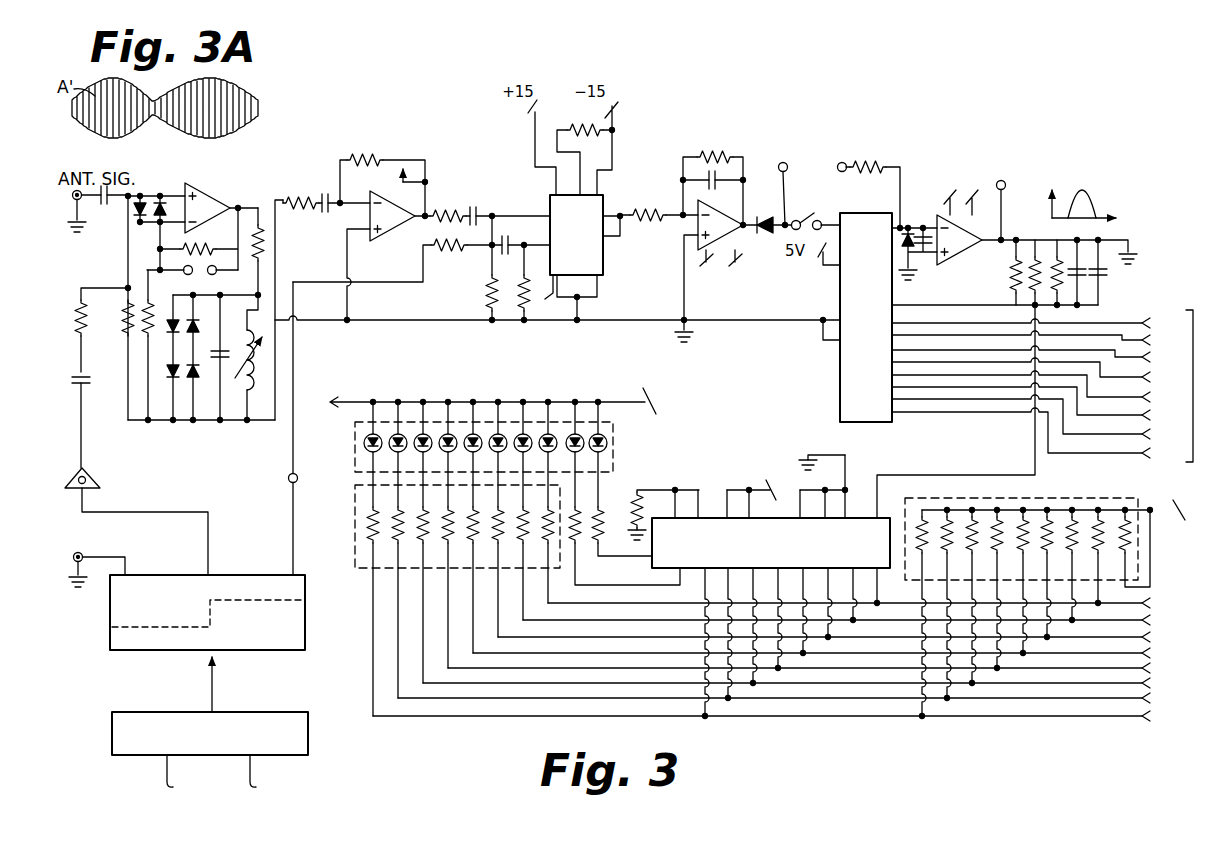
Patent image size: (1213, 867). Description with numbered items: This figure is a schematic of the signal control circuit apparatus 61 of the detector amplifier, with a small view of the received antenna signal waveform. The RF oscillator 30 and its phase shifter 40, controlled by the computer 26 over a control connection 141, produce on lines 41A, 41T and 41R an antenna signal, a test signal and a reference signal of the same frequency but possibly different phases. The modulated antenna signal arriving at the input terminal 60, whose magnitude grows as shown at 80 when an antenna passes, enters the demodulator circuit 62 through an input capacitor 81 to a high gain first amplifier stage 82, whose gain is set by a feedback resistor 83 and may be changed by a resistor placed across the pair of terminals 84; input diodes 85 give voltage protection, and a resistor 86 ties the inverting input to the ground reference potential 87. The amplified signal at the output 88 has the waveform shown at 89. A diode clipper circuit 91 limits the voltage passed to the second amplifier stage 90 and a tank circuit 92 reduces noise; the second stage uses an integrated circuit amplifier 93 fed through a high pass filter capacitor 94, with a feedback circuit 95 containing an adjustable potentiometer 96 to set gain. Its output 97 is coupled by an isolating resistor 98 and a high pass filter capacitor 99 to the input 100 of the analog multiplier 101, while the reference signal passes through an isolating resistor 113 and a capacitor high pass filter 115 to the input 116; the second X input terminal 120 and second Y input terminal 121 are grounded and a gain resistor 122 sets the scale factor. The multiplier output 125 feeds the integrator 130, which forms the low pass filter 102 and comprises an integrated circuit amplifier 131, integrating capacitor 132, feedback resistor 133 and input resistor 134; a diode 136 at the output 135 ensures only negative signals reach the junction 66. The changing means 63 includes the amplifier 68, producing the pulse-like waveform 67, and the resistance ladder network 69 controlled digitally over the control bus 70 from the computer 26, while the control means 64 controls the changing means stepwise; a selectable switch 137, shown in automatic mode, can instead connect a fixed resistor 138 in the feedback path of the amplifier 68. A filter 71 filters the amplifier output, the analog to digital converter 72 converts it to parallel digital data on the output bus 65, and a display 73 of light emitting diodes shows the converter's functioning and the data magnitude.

In FIG. 3A, the antenna signal magnitude 80 is at (144, 90).
In FIG. 3A, the amplified signal waveform 89 is at (192, 106).
In FIG. 3, the input terminal 60 is at (97, 210).
In FIG. 3, the input capacitor 81 is at (117, 185).
In FIG. 3, the first amplifier stage 82 is at (216, 190).
In FIG. 3, the feedback resistor 83 is at (210, 243).
In FIG. 3, the pair of terminals 84 is at (190, 276).
In FIG. 3, the input diodes 85 is at (170, 189).
In FIG. 3, the resistor 86 is at (146, 305).
In FIG. 3, the output of first amplifier stage 88 is at (263, 228).
In FIG. 3, the diode clipper circuit 91 is at (186, 404).
In FIG. 3, the tank circuit 92 is at (237, 307).
In FIG. 3, the high pass filter capacitor 94 is at (324, 193).
In FIG. 3, the second amplifier stage 90 is at (387, 151).
In FIG. 3, the integrated circuit amplifier 93 is at (390, 192).
In FIG. 3, the feedback circuit 95 is at (434, 165).
In FIG. 3, the adjustable potentiometer 96 is at (404, 160).
In FIG. 3, the output of second amplifier stage 97 is at (440, 212).
In FIG. 3, the isolating resistor 98 is at (474, 206).
In FIG. 3, the high pass filter capacitor 99 is at (484, 205).
In FIG. 3, the multiplier input 100 is at (522, 200).
In FIG. 3, the analog multiplier integrated circuit 101 is at (605, 255).
In FIG. 3, the isolating resistor 113 is at (447, 250).
In FIG. 3, the capacitor high pass filter 115 is at (500, 266).
In FIG. 3, the multiplier input 116 is at (495, 290).
In FIG. 3, the X2 input terminal 120 is at (527, 293).
In FIG. 3, the Y2 input terminal 121 is at (596, 170).
In FIG. 3, the gain resistor 122 is at (575, 127).
In FIG. 3, the multiplier output terminal 125 is at (625, 212).
In FIG. 3, the integrator 130 is at (715, 165).
In FIG. 3, the integrated circuit amplifier 131 is at (745, 222).
In FIG. 3, the integrating capacitor 132 is at (706, 178).
In FIG. 3, the feedback resistor 133 is at (712, 156).
In FIG. 3, the input resistor 134 is at (652, 219).
In FIG. 3, the integrator output 135 is at (752, 232).
In FIG. 3, the diode 136 is at (787, 171).
In FIG. 3, the selectable switch 137 is at (832, 218).
In FIG. 3, the fixed resistor 138 is at (866, 162).
In FIG. 3, the demodulator circuit 62 is at (713, 201).
In FIG. 3, the changing means 63 is at (1003, 193).
In FIG. 3, the control means 64 is at (766, 540).
In FIG. 3, the output bus 65 is at (1181, 593).
In FIG. 3, the junction 66 is at (807, 217).
In FIG. 3, the waveform 67 is at (1088, 200).
In FIG. 3, the amplifier 68 is at (963, 257).
In FIG. 3, the resistance ladder network 69 is at (862, 423).
In FIG. 3, the control bus 70 is at (1130, 317).
In FIG. 3, the filter 71 is at (1140, 244).
In FIG. 3, the analog to digital converter 72 is at (882, 515).
In FIG. 3, the display 73 is at (617, 453).
In FIG. 3, the ground reference potential 87 is at (652, 321).
In FIG. 3, the low pass filter 102 is at (828, 154).
In FIG. 3, the RF oscillator 30 is at (307, 584).
In FIG. 3, the phase shifter 40 is at (307, 632).
In FIG. 3, the computer 26 is at (309, 745).
In FIG. 3, the antenna signal line 41A is at (128, 560).
In FIG. 3, the test signal line 41T is at (210, 545).
In FIG. 3, the reference signal line 41R is at (295, 522).
In FIG. 3, the test/antenna signal control line 141 is at (210, 690).
In FIG. 3, the signal control circuit apparatus 61 is at (385, 209).